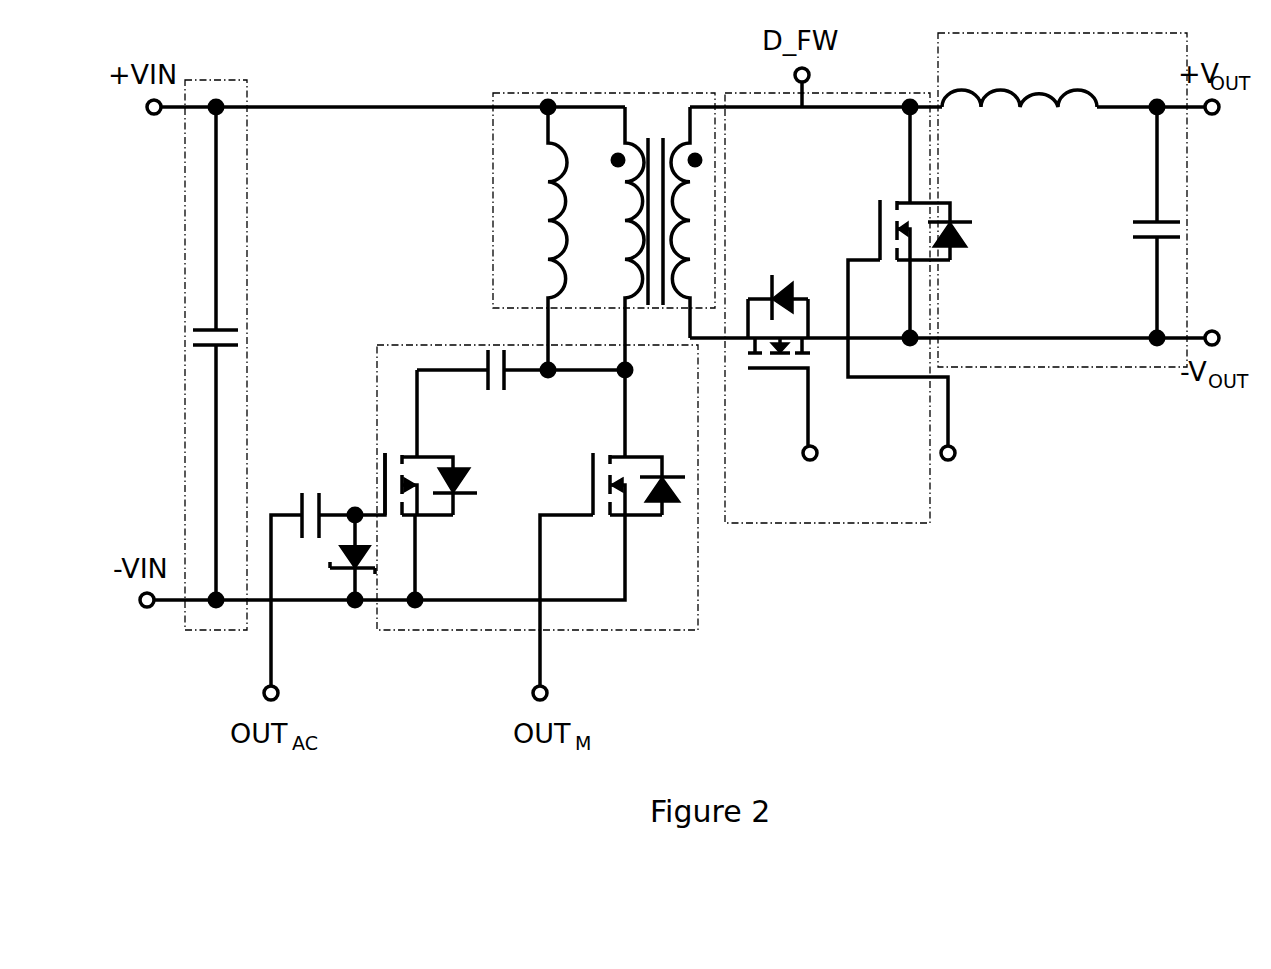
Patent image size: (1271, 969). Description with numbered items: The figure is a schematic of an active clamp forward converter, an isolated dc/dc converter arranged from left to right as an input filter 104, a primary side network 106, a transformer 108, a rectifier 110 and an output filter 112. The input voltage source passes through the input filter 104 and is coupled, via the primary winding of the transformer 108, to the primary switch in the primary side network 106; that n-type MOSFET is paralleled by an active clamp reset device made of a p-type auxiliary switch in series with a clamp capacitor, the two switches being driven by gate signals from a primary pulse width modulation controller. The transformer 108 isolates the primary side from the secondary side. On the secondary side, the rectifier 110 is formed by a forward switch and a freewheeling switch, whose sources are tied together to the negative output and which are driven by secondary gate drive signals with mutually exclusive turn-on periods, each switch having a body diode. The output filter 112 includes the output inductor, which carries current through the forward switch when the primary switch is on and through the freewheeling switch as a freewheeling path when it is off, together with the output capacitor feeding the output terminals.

The input filter 104 is at (220, 630).
The primary side network 106 is at (483, 643).
The transformer 108 is at (565, 90).
The rectifier 110 is at (870, 525).
The output filter 112 is at (1090, 367).